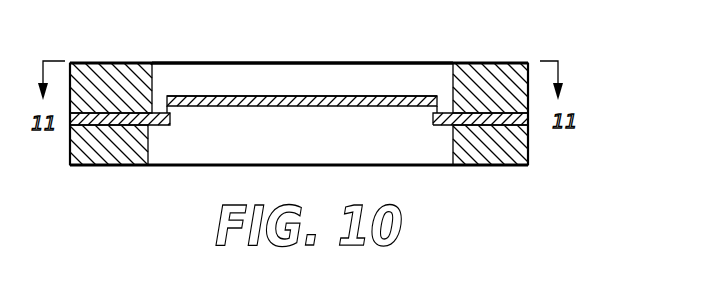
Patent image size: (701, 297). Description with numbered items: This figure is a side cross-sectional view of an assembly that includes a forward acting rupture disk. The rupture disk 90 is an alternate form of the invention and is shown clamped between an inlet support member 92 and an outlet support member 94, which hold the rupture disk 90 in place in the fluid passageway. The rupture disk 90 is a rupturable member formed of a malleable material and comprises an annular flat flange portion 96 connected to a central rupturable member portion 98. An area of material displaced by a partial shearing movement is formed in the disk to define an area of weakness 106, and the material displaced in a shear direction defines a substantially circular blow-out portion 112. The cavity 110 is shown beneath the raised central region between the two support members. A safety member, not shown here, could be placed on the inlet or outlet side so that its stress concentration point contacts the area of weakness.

The rupture disk 90 is at (381, 88).
The inlet support member 92 is at (483, 77).
The outlet support member 94 is at (500, 147).
The annular flat flange portion 96 is at (125, 107).
The central rupturable member portion 98 is at (268, 100).
The area of weakness 106 is at (432, 110).
The cavity 110 is at (205, 80).
The blow-out portion 112 is at (307, 98).